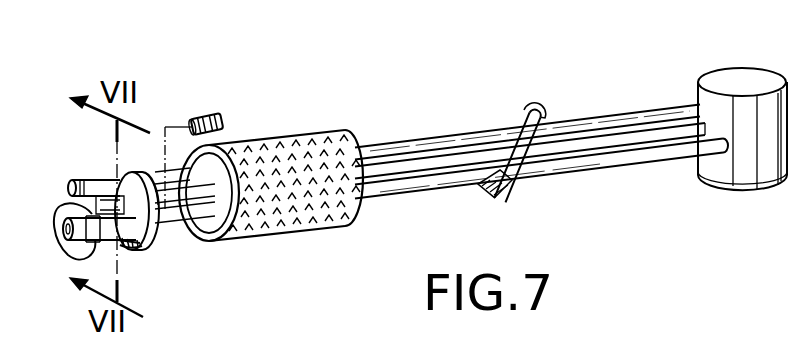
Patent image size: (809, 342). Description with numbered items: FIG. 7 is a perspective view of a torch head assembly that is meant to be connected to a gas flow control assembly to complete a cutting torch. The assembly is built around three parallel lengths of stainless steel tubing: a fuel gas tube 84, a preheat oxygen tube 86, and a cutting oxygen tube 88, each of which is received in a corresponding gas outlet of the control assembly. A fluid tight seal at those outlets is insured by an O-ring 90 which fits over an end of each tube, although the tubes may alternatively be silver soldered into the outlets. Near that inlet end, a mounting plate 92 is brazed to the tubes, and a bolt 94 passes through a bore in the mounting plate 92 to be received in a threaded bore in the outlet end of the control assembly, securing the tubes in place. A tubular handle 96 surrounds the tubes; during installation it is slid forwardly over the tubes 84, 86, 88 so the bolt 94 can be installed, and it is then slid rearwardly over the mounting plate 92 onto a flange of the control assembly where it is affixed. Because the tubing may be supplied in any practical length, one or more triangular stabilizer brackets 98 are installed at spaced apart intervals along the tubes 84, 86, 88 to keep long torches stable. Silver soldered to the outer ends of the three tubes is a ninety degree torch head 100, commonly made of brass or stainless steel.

The fuel gas tube 84 is at (612, 110).
The preheat oxygen tube 86 is at (640, 155).
The cutting oxygen tube 88 is at (575, 124).
The O-ring 90 is at (60, 214).
The mounting plate 92 is at (112, 172).
The bolt 94 is at (205, 112).
The tubular handle 96 is at (322, 138).
The triangular stabilizer brackets 98 is at (531, 157).
The torch head 100 is at (758, 80).